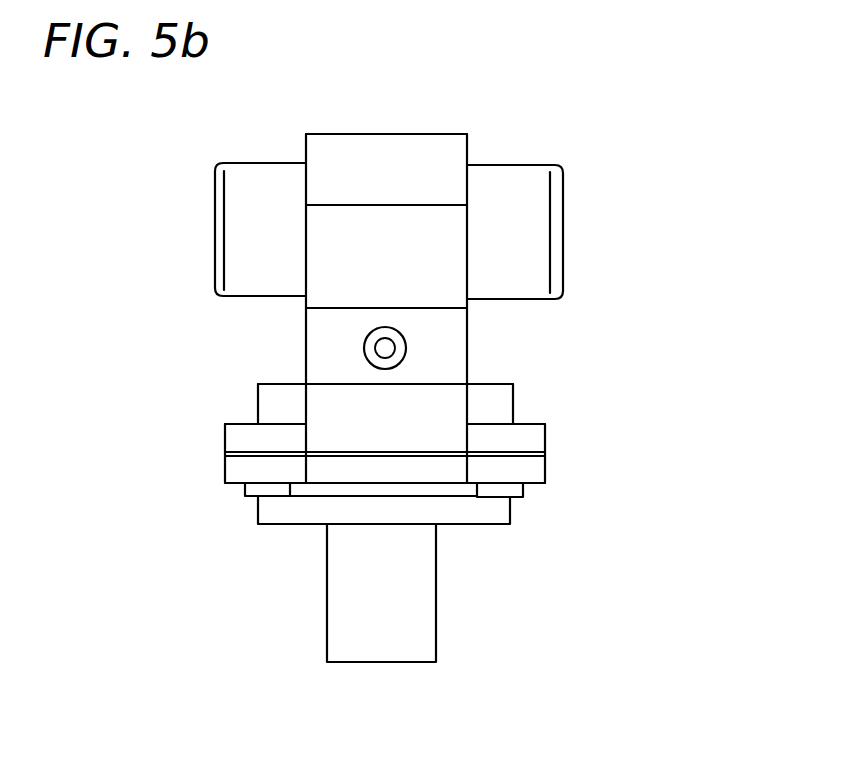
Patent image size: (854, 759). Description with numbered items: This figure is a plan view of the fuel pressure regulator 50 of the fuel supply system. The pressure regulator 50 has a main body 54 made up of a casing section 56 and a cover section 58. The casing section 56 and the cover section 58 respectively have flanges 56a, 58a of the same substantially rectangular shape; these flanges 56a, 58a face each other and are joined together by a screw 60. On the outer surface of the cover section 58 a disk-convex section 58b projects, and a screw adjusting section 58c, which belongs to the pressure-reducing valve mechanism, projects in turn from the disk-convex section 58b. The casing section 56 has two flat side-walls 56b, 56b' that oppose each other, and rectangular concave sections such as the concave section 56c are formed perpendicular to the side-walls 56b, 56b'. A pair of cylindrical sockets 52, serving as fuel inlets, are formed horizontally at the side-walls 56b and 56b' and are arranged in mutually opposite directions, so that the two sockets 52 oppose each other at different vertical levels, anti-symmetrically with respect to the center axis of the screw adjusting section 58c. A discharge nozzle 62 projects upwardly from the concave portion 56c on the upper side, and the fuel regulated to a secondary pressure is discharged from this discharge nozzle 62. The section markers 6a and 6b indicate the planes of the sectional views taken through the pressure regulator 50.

The section line 6a is at (212, 228).
The section line 6b is at (388, 126).
The pressure regulator 50 is at (566, 129).
The cylindrical sockets 52 is at (263, 170).
The main body 54 is at (600, 350).
The casing section 56 is at (369, 308).
The flange 56a is at (235, 437).
The side-wall 56b is at (498, 344).
The side-wall 56b' is at (275, 344).
The concave section 56c is at (312, 360).
The cover section 58 is at (373, 531).
The flange 58a is at (235, 468).
The disk-convex section 58b is at (503, 511).
The screw adjusting section 58c is at (428, 594).
The screw 60 is at (253, 490).
The discharge nozzle 62 is at (385, 327).